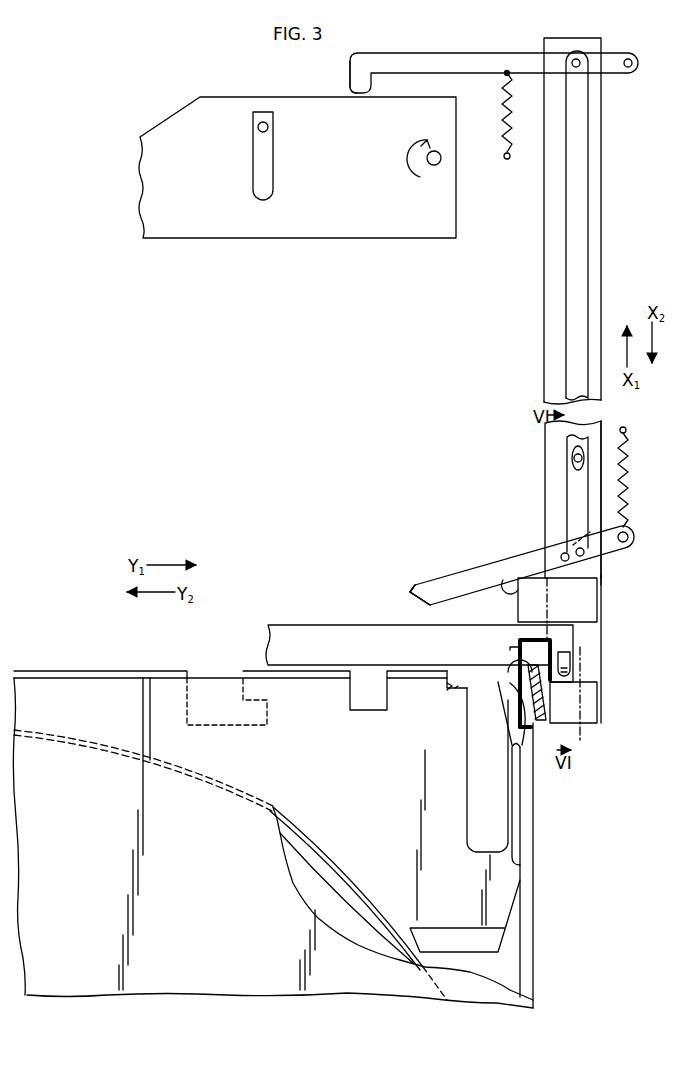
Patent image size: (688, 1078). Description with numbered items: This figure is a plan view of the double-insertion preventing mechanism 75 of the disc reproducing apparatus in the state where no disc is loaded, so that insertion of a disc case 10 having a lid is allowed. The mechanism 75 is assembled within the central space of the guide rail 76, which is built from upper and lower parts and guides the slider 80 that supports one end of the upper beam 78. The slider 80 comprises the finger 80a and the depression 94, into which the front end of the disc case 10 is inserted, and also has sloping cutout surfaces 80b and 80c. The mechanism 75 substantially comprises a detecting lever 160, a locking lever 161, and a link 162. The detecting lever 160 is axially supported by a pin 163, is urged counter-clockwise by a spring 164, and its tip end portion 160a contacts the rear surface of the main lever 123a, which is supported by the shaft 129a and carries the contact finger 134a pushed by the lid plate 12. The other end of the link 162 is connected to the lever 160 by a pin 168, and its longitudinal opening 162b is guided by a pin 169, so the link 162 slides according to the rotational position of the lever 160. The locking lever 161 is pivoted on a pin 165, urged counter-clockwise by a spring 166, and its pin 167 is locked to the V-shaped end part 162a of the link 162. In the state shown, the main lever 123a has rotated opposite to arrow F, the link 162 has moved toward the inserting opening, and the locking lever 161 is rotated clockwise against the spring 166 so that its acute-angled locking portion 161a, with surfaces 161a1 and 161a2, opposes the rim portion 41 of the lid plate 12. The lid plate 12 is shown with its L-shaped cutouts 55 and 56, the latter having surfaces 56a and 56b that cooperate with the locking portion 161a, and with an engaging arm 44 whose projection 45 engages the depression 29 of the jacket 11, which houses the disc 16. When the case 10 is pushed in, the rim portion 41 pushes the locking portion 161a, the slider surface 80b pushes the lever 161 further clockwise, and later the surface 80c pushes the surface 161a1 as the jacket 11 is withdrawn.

The disc case 10 is at (537, 916).
The jacket 11 is at (163, 992).
The lid plate 12 is at (128, 671).
The disc 16 is at (327, 872).
The depression 29 is at (520, 757).
The rim portion 41 is at (413, 672).
The engaging arm 44 is at (508, 798).
The projection 45 is at (517, 742).
The L-shaped cutout 55 is at (213, 690).
The L-shaped cutout 56 is at (458, 680).
The surface of cutout 56a is at (455, 690).
The surface of cutout 56b is at (447, 688).
The double-insertion preventing mechanism 75 is at (429, 362).
The guide rail 76 is at (545, 297).
The upper beam 78 is at (296, 628).
The slider 80 is at (503, 583).
The finger 80a is at (597, 612).
The sloping cutout surface 80b is at (547, 618).
The sloping cutout surface 80c is at (539, 723).
The depression 94 is at (515, 690).
The main lever 123a is at (393, 240).
The shaft 129a is at (441, 162).
The contact finger 134a is at (273, 192).
The detecting lever 160 is at (470, 53).
The tip end portion 160a is at (350, 84).
The locking lever 161 is at (507, 557).
The locking portion 161a is at (415, 584).
The surface of locking portion 161a1 is at (420, 600).
The surface of locking portion 161a2 is at (408, 590).
The link 162 is at (580, 278).
The V-shaped end part 162a is at (600, 553).
The longitudinal opening 162b is at (572, 455).
The pin 163 is at (628, 58).
The spring 164 is at (503, 120).
The pin 165 is at (562, 551).
The spring 166 is at (628, 486).
The pin 167 is at (602, 580).
The pin 168 is at (579, 67).
The pin 169 is at (574, 462).